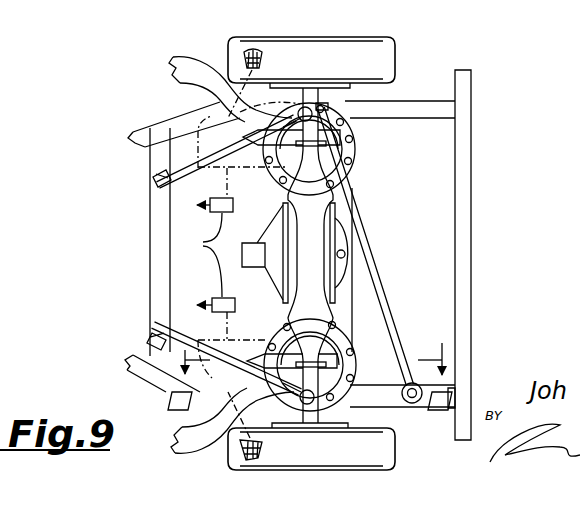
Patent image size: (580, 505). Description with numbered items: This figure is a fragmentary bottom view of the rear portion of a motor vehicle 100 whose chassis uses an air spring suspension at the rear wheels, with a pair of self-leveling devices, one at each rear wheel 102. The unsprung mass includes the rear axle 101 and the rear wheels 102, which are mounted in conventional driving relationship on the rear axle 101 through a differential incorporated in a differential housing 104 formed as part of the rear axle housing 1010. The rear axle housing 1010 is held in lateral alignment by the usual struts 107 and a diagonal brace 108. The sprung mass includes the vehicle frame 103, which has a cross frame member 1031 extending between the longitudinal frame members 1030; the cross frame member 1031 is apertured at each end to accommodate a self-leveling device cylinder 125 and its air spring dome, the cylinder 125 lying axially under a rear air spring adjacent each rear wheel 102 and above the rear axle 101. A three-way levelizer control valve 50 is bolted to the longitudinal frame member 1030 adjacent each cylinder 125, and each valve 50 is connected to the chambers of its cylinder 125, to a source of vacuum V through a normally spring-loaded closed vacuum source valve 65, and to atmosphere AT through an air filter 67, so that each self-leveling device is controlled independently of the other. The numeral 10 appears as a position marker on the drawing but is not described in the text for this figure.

The vehicle 10 is at (310, 401).
The three-way levelizer control valve 50 is at (201, 116).
The vacuum source valve 65 is at (201, 255).
The air filter 67 is at (252, 50).
The motor vehicle 100 is at (377, 31).
The rear axle 101 is at (321, 341).
The rear wheels 102 is at (315, 37).
The vehicle frame 103 is at (177, 106).
The differential housing 104 is at (347, 262).
The struts 107 is at (183, 165).
The diagonal brace 108 is at (396, 337).
The self-leveling device cylinder 125 is at (356, 128).
The rear axle housing 1010 is at (334, 193).
The longitudinal frame members 1030 is at (188, 58).
The cross frame member 1031 is at (353, 293).